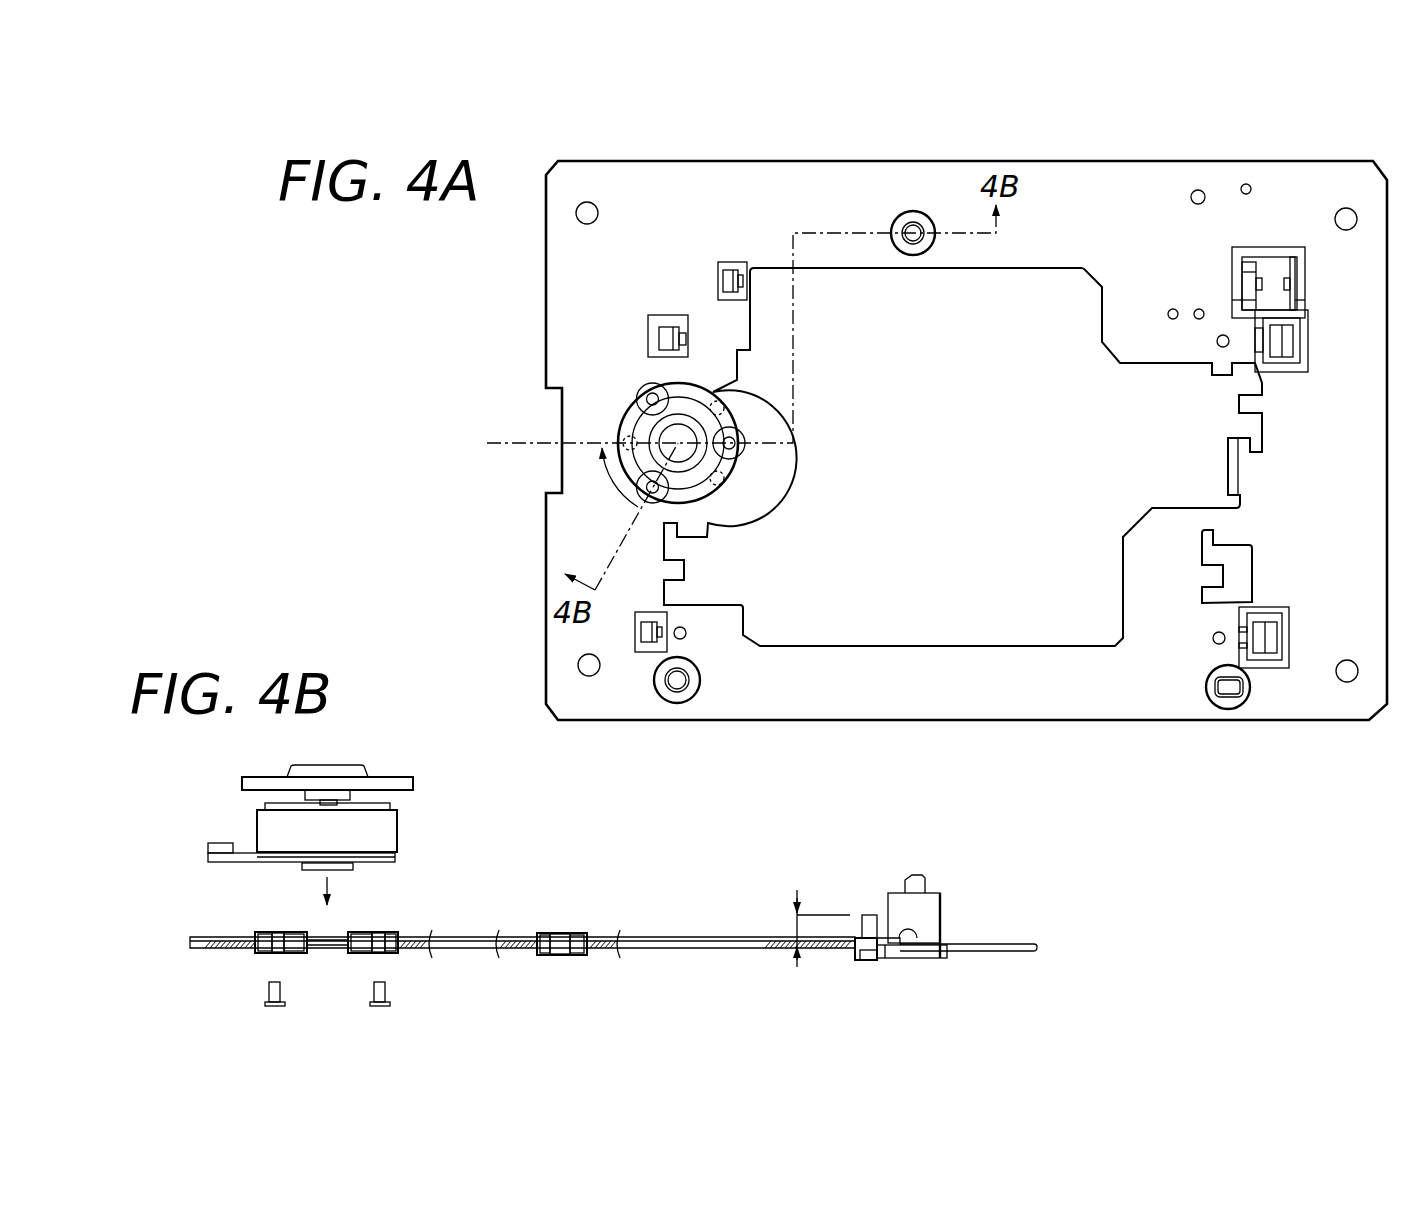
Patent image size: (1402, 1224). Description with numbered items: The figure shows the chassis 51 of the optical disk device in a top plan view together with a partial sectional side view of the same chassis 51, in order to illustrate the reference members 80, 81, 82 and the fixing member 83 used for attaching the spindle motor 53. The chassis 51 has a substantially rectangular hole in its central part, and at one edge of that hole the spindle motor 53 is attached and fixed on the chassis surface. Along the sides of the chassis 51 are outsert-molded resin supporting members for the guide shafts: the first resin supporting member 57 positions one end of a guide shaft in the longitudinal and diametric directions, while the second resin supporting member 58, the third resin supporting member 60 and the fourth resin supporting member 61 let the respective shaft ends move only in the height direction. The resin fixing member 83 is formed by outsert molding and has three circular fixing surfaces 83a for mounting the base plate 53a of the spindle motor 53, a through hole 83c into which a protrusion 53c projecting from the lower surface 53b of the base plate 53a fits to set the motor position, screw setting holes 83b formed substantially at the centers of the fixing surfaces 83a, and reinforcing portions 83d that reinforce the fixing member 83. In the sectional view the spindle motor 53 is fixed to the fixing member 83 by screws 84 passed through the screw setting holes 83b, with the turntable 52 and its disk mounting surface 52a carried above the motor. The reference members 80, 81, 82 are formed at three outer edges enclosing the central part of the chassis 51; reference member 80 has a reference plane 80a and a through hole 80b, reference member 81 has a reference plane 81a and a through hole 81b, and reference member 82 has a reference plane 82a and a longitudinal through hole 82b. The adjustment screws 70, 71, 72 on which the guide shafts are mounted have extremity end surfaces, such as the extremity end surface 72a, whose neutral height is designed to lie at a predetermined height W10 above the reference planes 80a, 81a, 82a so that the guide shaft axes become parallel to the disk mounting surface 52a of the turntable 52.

In FIG. 4A, the chassis 51 is at (958, 724).
In FIG. 4B, the chassis 51 is at (666, 955).
In FIG. 4B, the turntable 52 is at (372, 760).
In FIG. 4B, the disk mounting surface 52a is at (383, 776).
In FIG. 4B, the spindle motor 53 is at (306, 853).
In FIG. 4B, the base plate 53a is at (202, 853).
In FIG. 4B, the lower surface 53b is at (253, 862).
In FIG. 4B, the protrusion 53c is at (337, 871).
In FIG. 4A, the first resin supporting member 57 is at (672, 312).
In FIG. 4A, the second resin supporting member 58 is at (1298, 375).
In FIG. 4A, the third resin supporting member 60 is at (645, 611).
In FIG. 4A, the fourth resin supporting member 61 is at (1292, 612).
In FIG. 4B, the fourth resin supporting member 61 is at (943, 900).
In FIG. 4A, the adjustment screw 70 is at (1219, 346).
In FIG. 4A, the adjustment screw 71 is at (686, 631).
In FIG. 4A, the adjustment screw 72 is at (1214, 634).
In FIG. 4B, the adjustment screw 72 is at (842, 937).
In FIG. 4B, the extremity end surface 72a is at (866, 914).
In FIG. 4A, the reference member 80 is at (896, 248).
In FIG. 4B, the reference member 80 is at (572, 903).
In FIG. 4A, the reference plane 80a is at (920, 225).
In FIG. 4B, the reference plane 80a is at (580, 932).
In FIG. 4A, the through hole 80b is at (915, 245).
In FIG. 4B, the through hole 80b is at (558, 936).
In FIG. 4A, the reference member 81 is at (740, 682).
In FIG. 4A, the reference plane 81a is at (692, 671).
In FIG. 4A, the through hole 81b is at (677, 688).
In FIG. 4A, the reference member 82 is at (1212, 725).
In FIG. 4B, the reference member 82 is at (922, 941).
In FIG. 4A, the reference plane 82a is at (1222, 703).
In FIG. 4B, the reference plane 82a is at (905, 932).
In FIG. 4A, the longitudinal through hole 82b is at (1222, 687).
In FIG. 4B, the longitudinal through hole 82b is at (885, 958).
In FIG. 4A, the fixing member 83 is at (718, 444).
In FIG. 4B, the fixing member 83 is at (332, 931).
In FIG. 4A, the fixing surface 83a is at (650, 396).
In FIG. 4B, the fixing surface 83a is at (260, 934).
In FIG. 4A, the screw setting hole 83b is at (640, 393).
In FIG. 4B, the screw setting hole 83b is at (277, 932).
In FIG. 4A, the through hole 83c is at (682, 428).
In FIG. 4B, the through hole 83c is at (327, 951).
In FIG. 4A, the reinforcing portion 83d is at (632, 428).
In FIG. 4B, the screw 84 is at (266, 1006).
In FIG. 4B, the predetermined height W10 is at (797, 930).